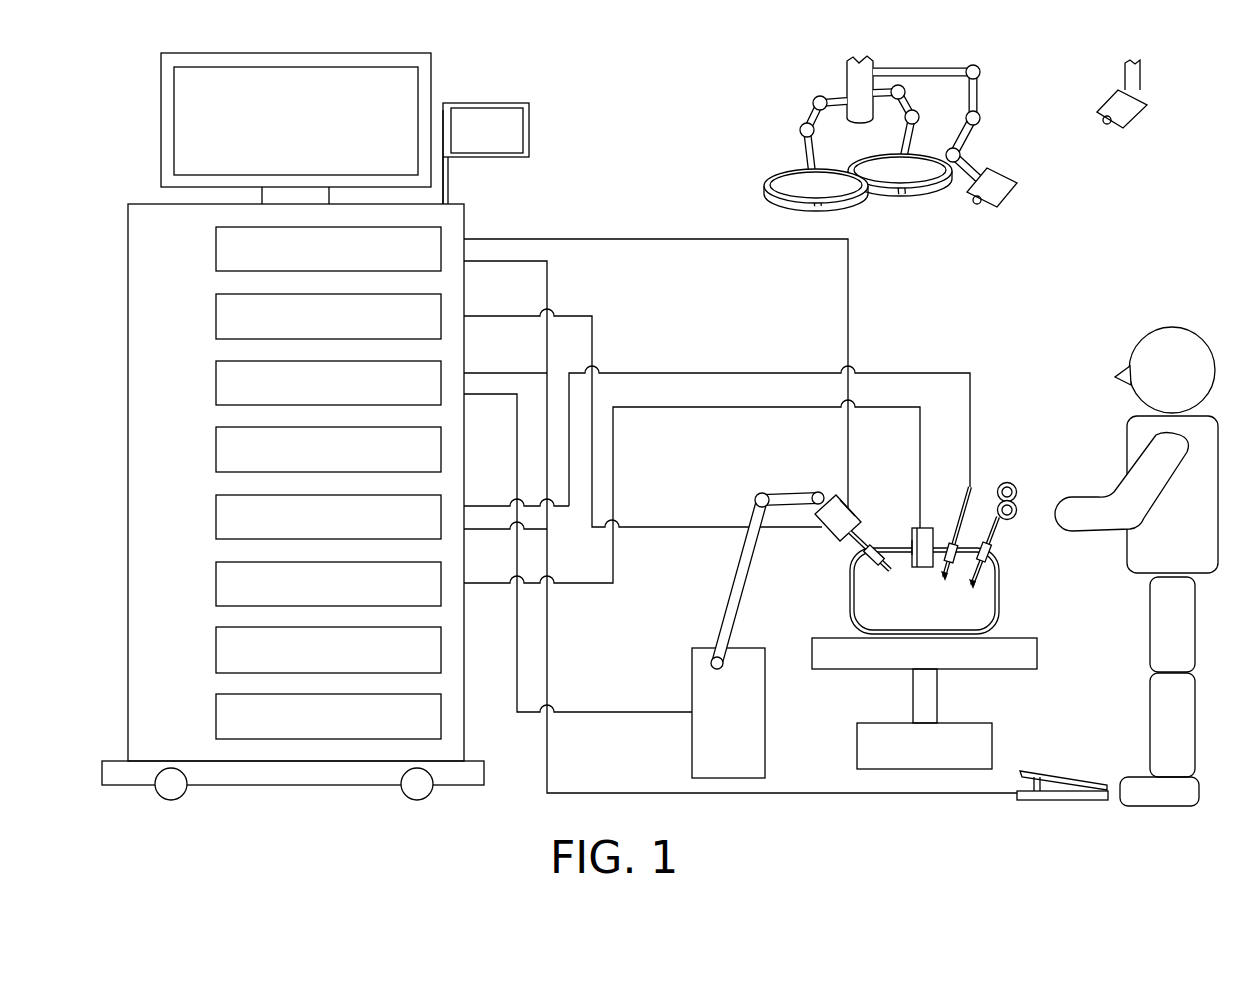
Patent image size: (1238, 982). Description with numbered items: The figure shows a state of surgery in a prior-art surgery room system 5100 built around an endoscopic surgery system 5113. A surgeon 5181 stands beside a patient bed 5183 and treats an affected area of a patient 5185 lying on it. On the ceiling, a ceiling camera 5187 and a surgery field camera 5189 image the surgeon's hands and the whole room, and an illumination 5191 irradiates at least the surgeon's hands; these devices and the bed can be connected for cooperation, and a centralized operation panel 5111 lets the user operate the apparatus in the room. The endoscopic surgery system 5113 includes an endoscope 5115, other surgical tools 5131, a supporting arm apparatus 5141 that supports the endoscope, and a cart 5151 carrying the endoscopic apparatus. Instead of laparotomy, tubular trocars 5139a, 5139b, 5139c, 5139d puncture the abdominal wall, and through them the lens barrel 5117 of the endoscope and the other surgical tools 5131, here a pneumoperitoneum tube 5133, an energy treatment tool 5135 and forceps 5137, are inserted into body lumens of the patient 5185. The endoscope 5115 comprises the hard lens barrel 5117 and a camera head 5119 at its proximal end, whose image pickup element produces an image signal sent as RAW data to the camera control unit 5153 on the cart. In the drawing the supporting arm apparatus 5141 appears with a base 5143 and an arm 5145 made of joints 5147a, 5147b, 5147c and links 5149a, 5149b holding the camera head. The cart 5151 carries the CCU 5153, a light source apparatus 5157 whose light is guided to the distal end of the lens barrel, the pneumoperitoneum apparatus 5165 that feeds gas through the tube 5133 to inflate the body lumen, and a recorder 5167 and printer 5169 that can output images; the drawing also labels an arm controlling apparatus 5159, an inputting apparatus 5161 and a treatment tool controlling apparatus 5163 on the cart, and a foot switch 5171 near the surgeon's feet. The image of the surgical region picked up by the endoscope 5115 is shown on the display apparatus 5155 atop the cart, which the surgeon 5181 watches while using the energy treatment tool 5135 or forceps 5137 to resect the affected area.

The endoscopic surgery system 5100 is at (1211, 77).
The centralized operation panel 5111 is at (530, 128).
The endoscopic surgery system 5113 is at (605, 100).
The endoscope 5115 is at (823, 488).
The lens barrel 5117 is at (853, 560).
The camera head 5119 is at (837, 538).
The other surgical tools 5131 is at (1027, 408).
The pneumoperitoneum tube 5133 is at (923, 527).
The energy treatment tool 5135 is at (972, 485).
The forceps 5137 is at (1012, 476).
The trocar 5139a is at (866, 562).
The trocar 5139b is at (908, 538).
The trocar 5139c is at (956, 565).
The trocar 5139d is at (993, 551).
The supporting arm apparatus 5141 is at (664, 744).
The base unit 5143 is at (766, 742).
The arm unit 5145 is at (718, 567).
The joint portion 5147a is at (817, 493).
The joint portion 5147b is at (753, 500).
The joint portion 5147c is at (710, 664).
The link 5149a is at (790, 494).
The link 5149b is at (728, 603).
The cart 5151 is at (464, 215).
The camera control unit (CCU) 5153 is at (216, 250).
The display apparatus 5155 is at (432, 72).
The light source apparatus 5157 is at (216, 316).
The arm controlling apparatus 5159 is at (216, 383).
The inputting apparatus 5161 is at (216, 449).
The treatment tool controlling apparatus 5163 is at (216, 517).
The pneumoperitoneum apparatus 5165 is at (216, 583).
The recorder 5167 is at (216, 650).
The printer 5169 is at (216, 716).
The foot switch 5171 is at (1062, 777).
The surgeon 5181 is at (1166, 326).
The patient bed 5183 is at (1037, 652).
The patient 5185 is at (997, 594).
The ceiling camera 5187 is at (1019, 189).
The surgery field camera 5189 is at (1140, 119).
The illumination 5191 is at (782, 178).